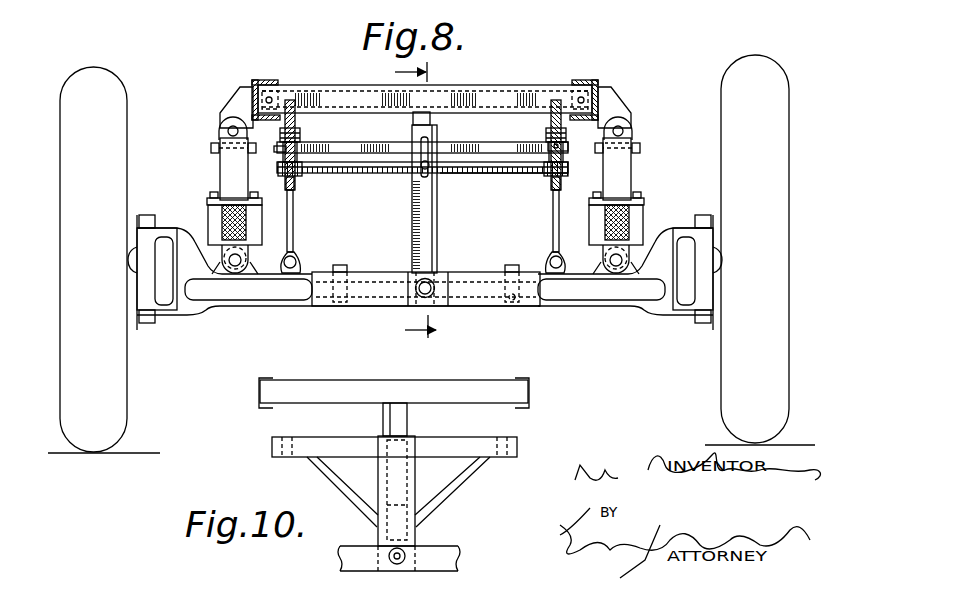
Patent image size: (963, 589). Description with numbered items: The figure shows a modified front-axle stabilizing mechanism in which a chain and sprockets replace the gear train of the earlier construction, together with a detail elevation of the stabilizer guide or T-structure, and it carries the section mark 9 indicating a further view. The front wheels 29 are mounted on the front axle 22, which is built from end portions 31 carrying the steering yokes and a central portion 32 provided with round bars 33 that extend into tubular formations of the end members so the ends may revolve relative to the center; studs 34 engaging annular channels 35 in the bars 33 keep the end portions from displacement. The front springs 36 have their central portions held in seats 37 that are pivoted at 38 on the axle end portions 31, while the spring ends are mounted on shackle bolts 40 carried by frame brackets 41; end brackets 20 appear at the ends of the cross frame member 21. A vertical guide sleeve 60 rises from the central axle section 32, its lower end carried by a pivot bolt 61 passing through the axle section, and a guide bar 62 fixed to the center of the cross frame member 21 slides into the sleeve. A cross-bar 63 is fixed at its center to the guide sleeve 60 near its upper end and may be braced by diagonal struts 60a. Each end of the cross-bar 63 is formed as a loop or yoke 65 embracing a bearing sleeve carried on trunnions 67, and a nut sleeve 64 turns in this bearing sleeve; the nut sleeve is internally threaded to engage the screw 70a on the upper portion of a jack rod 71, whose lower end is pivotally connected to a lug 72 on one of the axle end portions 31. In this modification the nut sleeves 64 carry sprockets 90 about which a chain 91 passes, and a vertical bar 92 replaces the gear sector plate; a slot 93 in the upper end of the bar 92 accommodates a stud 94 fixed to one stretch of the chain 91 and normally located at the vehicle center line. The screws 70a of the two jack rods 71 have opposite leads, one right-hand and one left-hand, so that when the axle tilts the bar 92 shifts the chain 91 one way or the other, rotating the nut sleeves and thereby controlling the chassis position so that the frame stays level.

In FIG. 8, the section line 9- 9 is at (424, 201).
In FIG. 8, the end bracket 20 is at (258, 78).
In FIG. 10, the end bracket 20 is at (262, 380).
In FIG. 8, the cross frame member 21 is at (305, 86).
In FIG. 10, the cross frame member 21 is at (477, 390).
In FIG. 8, the front axle 22 is at (363, 307).
In FIG. 8, the front wheels 29 is at (107, 80).
In FIG. 8, the axle end portions 31 is at (225, 297).
In FIG. 8, the central portion of axle 32 is at (408, 307).
In FIG. 10, the central portion of axle 32 is at (447, 556).
In FIG. 8, the round bars 33 is at (488, 290).
In FIG. 8, the studs 34 is at (513, 263).
In FIG. 8, the annular channels 35 is at (512, 299).
In FIG. 8, the front springs 36 is at (230, 170).
In FIG. 8, the spring seats 37 is at (212, 225).
In FIG. 8, the pivot 38 is at (235, 266).
In FIG. 8, the shackle bolts 40 is at (213, 147).
In FIG. 8, the frame brackets 41 is at (237, 108).
In FIG. 8, the vertical guide sleeve 60 is at (413, 233).
In FIG. 10, the vertical guide sleeve 60 is at (417, 477).
In FIG. 10, the diagonal struts 60a is at (325, 476).
In FIG. 10, the pivot bolt 61 is at (408, 550).
In FIG. 10, the guide bar 62 is at (395, 420).
In FIG. 8, the cross-bar 63 is at (330, 148).
In FIG. 10, the cross-bar 63 is at (476, 443).
In FIG. 8, the nut sleeve 64 is at (298, 146).
In FIG. 8, the loops or yokes 65 is at (280, 146).
In FIG. 8, the trunnions 67 is at (283, 166).
In FIG. 8, the screws 70a is at (300, 187).
In FIG. 8, the jack rod 71 is at (300, 227).
In FIG. 8, the lug 72 is at (303, 262).
In FIG. 8, the sprockets 90 is at (285, 183).
In FIG. 8, the chain 91 is at (492, 163).
In FIG. 8, the vertical bar 92 is at (422, 213).
In FIG. 8, the slot 93 is at (433, 137).
In FIG. 8, the stud 94 is at (420, 162).